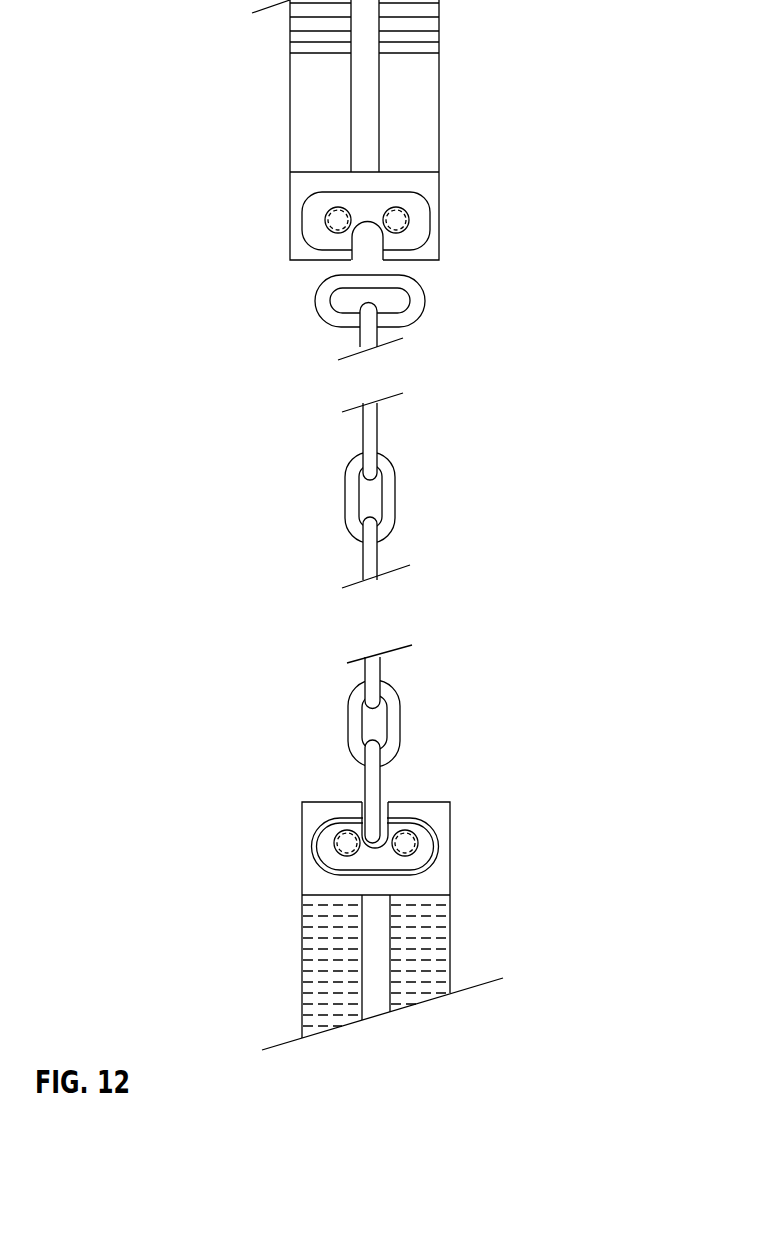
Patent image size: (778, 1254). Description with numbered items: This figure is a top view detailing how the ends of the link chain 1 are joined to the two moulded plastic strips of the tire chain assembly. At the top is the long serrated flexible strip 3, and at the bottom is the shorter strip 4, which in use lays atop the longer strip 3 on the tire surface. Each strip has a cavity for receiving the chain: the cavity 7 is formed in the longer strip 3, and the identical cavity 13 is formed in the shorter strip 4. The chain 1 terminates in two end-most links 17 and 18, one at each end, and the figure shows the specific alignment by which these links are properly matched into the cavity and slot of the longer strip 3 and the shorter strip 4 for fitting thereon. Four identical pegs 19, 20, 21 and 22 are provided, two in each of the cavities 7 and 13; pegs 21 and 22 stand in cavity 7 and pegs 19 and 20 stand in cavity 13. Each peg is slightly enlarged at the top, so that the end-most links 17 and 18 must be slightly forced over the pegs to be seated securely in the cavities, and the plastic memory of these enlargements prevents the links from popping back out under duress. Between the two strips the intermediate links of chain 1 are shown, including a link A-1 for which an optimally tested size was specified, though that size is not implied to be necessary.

The link chain 1 is at (415, 300).
The long serrated flexible strip 3 is at (420, 137).
The shorter strip 4 is at (440, 870).
The cavity 7 is at (363, 205).
The cavity 13 is at (350, 845).
The end-most link 17 is at (327, 312).
The end-most link 18 is at (372, 855).
The peg 19 is at (345, 838).
The peg 20 is at (405, 843).
The peg 21 is at (342, 222).
The peg 22 is at (388, 218).
The link A-1 is at (357, 467).